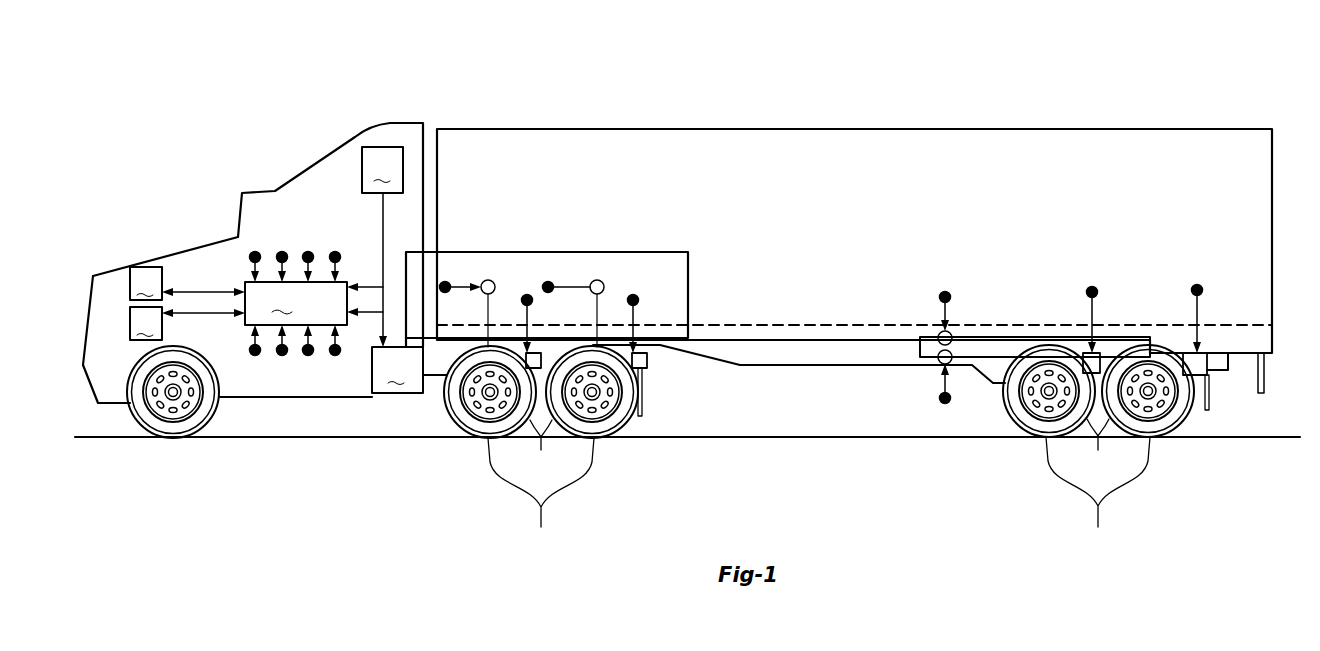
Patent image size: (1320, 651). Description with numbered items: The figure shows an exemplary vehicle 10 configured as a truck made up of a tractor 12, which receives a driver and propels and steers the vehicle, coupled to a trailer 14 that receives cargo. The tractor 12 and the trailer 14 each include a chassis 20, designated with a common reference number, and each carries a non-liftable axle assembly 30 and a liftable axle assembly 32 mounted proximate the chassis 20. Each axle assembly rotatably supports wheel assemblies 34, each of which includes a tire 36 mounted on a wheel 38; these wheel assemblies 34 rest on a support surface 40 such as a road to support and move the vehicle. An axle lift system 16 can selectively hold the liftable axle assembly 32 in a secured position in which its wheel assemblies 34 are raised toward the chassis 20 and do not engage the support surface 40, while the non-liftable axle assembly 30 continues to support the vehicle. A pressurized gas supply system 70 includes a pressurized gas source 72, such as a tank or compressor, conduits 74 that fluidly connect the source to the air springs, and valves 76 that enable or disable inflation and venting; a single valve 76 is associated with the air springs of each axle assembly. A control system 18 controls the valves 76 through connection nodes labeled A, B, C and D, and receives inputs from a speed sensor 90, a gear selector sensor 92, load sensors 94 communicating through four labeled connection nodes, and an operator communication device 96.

The vehicle 10 is at (300, 141).
The tractor 12 is at (93, 276).
The trailer 14 is at (1262, 128).
The axle lift system 16 is at (735, 400).
The control system 18 is at (294, 304).
The chassis 20 is at (820, 325).
The non-liftable axle assembly 30 is at (638, 429).
The liftable axle assembly 32 is at (450, 432).
The wheel assembly 34 is at (819, 495).
The tire 36 is at (821, 447).
The wheel 38 is at (1030, 412).
The support surface 40 is at (393, 437).
The pressurized gas supply system 70 is at (541, 210).
The pressurized gas source 72 is at (397, 370).
The conduit 74 is at (671, 252).
The valve 76 is at (496, 283).
The speed sensor 90 is at (187, 283).
The gear selector sensor 92 is at (187, 323).
The load sensor 94 is at (543, 355).
The operator communication device 96 is at (382, 170).